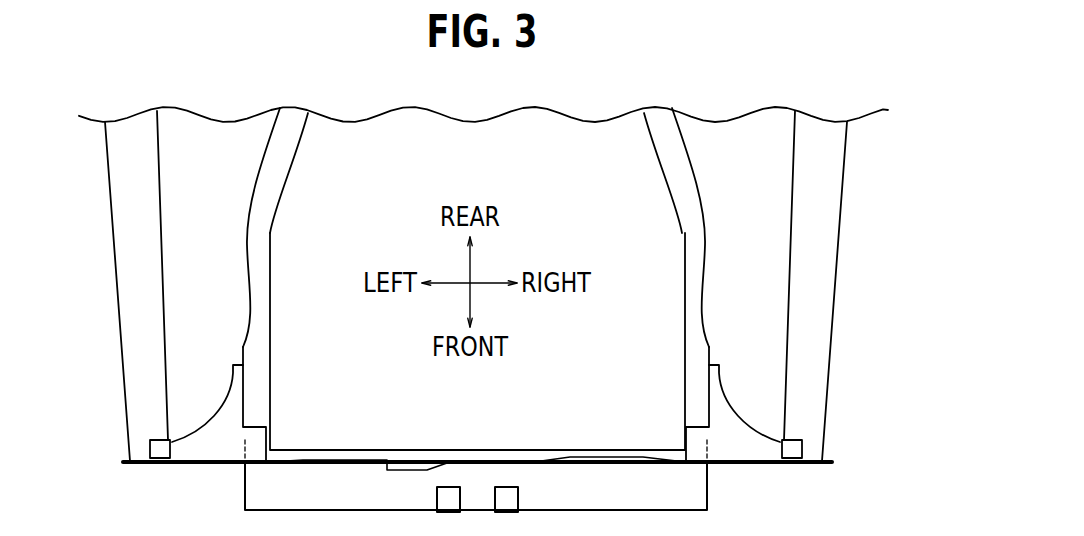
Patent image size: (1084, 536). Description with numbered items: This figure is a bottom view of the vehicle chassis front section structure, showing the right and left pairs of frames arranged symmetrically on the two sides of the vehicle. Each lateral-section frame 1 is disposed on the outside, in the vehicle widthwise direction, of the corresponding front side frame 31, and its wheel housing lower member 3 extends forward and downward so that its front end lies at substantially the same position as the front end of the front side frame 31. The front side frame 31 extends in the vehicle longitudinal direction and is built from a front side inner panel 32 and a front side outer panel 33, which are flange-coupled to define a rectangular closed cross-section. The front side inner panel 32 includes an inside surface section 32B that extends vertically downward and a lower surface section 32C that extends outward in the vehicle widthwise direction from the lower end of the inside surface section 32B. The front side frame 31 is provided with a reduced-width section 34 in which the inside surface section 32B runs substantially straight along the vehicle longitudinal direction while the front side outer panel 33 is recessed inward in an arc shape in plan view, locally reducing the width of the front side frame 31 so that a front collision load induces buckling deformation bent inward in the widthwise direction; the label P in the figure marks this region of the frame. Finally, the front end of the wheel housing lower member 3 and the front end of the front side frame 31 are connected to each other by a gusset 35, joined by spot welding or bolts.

The lateral-section frame 1 is at (125, 318).
The wheel housing lower member 3 is at (145, 386).
The front side frame 31 is at (270, 368).
The front side inner panel 32 is at (270, 253).
The inside surface section 32B is at (272, 334).
The lower surface section 32C is at (255, 403).
The front side outer panel 33 is at (243, 347).
The reduced-width section 34 is at (253, 311).
The gusset 35 is at (208, 443).
The pressing direction P is at (272, 305).